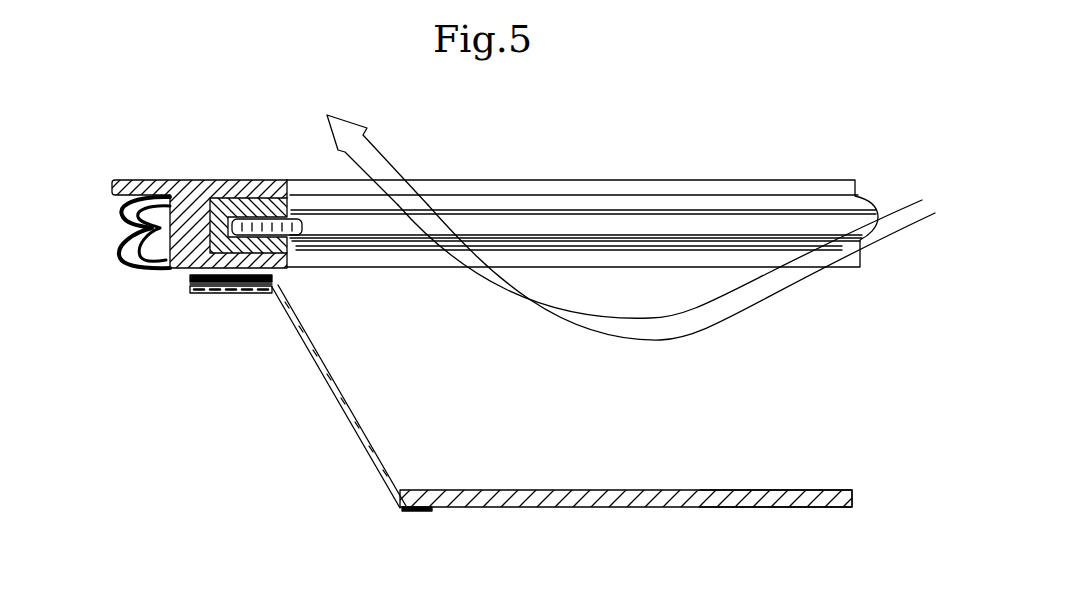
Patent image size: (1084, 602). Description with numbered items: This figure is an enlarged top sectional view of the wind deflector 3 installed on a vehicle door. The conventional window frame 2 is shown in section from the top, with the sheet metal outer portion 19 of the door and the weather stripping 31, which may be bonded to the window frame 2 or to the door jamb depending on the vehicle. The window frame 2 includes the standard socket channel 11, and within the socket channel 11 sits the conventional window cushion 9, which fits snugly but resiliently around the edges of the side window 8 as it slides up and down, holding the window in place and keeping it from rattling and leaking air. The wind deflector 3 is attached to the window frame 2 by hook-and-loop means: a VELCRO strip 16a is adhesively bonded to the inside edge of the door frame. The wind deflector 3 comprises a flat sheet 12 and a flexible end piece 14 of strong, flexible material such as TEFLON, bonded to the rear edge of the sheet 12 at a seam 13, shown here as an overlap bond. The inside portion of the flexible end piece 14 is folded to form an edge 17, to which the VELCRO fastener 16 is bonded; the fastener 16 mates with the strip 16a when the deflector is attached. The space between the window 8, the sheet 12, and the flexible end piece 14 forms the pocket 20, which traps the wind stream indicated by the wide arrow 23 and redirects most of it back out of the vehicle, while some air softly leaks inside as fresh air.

The window frame 2 is at (183, 213).
The wind deflector 3 is at (500, 508).
The side window 8 is at (580, 222).
The window cushion 9 is at (304, 228).
The socket channel 11 is at (210, 220).
The flat sheet 12 is at (735, 508).
The seam 13 is at (423, 508).
The flexible end piece 14 is at (312, 372).
The VELCRO fastener 16 is at (184, 287).
The VELCRO strip 16a is at (187, 275).
The edge 17 is at (242, 295).
The sheet metal outer portion 19 is at (118, 182).
The pocket 20 is at (590, 440).
The wide arrow 23 is at (383, 150).
The weather stripping 31 is at (132, 215).